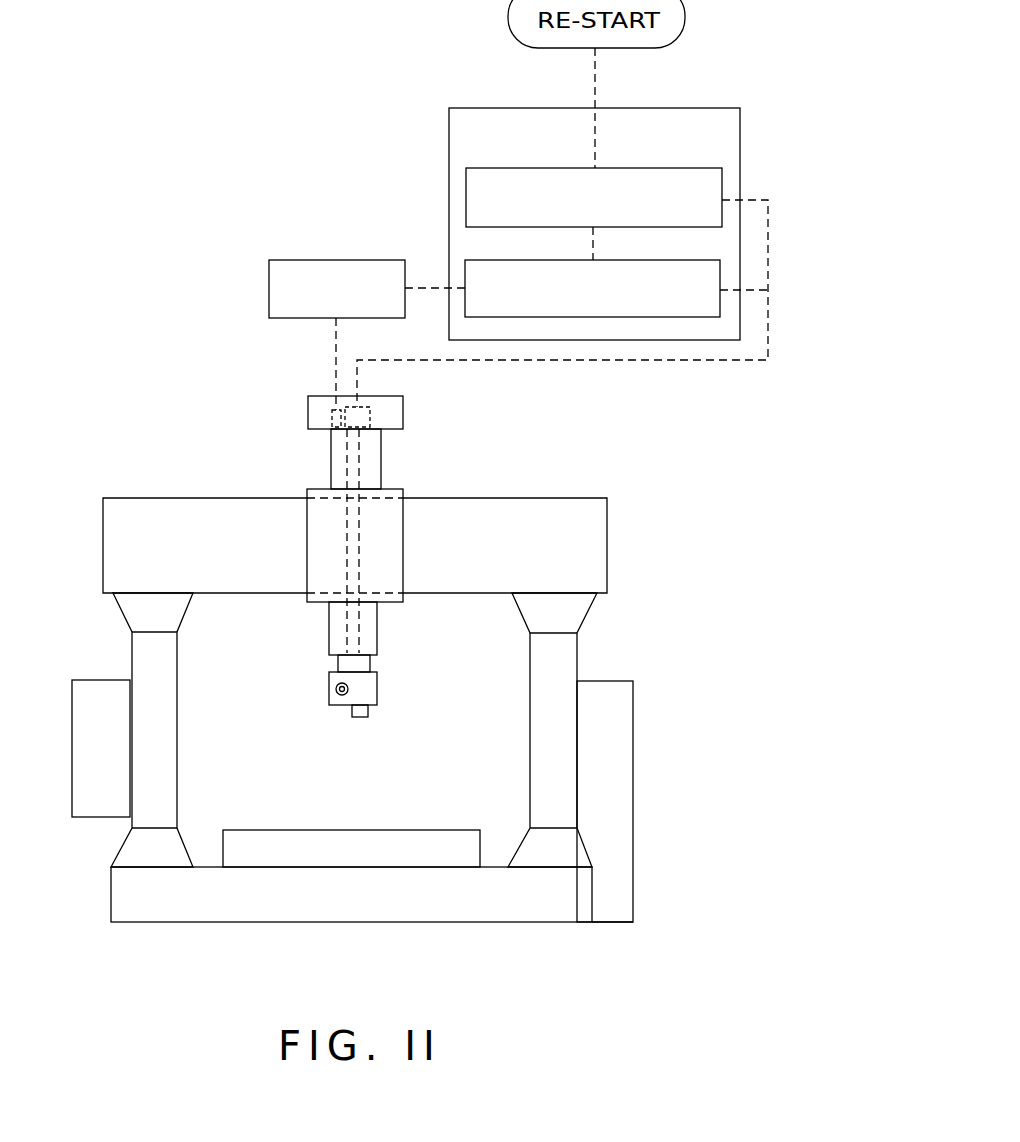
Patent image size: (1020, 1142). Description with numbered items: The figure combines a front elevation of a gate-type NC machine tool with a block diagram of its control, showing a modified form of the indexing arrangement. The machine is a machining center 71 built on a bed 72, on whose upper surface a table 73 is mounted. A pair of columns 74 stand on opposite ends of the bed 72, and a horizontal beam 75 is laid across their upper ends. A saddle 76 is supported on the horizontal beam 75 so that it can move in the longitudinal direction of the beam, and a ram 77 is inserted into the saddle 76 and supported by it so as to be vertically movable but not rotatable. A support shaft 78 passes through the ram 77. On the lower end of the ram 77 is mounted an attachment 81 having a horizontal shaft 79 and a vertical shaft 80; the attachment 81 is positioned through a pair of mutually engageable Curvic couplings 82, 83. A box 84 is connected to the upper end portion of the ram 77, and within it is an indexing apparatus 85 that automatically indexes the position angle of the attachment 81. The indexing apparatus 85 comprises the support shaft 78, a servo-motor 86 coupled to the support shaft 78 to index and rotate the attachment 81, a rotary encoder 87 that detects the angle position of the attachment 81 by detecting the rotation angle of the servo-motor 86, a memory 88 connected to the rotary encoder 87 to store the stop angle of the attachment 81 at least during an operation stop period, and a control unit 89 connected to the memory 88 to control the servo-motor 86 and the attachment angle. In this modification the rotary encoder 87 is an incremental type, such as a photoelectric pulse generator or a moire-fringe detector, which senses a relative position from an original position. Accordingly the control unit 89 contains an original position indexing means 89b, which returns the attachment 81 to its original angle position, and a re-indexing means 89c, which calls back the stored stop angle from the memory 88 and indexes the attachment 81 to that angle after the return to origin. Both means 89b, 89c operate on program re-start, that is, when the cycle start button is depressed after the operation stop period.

The machining center 71 is at (176, 392).
The bed 72 is at (312, 903).
The table 73 is at (316, 838).
The columns 74 is at (165, 758).
The horizontal beam 75 is at (609, 548).
The saddle 76 is at (405, 548).
The ram 77 is at (378, 630).
The support shaft 78 is at (347, 466).
The horizontal shaft 79 is at (336, 690).
The vertical shaft 80 is at (356, 718).
The attachment 81 is at (378, 690).
The Curvic coupling 82 is at (353, 655).
The Curvic coupling 83 is at (340, 665).
The box 84 is at (404, 398).
The indexing apparatus 85 is at (225, 265).
The servo-motor 86 is at (372, 420).
The rotary encoder 87 is at (331, 420).
The memory 88 is at (322, 260).
The control unit 89 is at (741, 138).
The original position indexing means 89b is at (466, 185).
The re-indexing means 89c is at (465, 270).